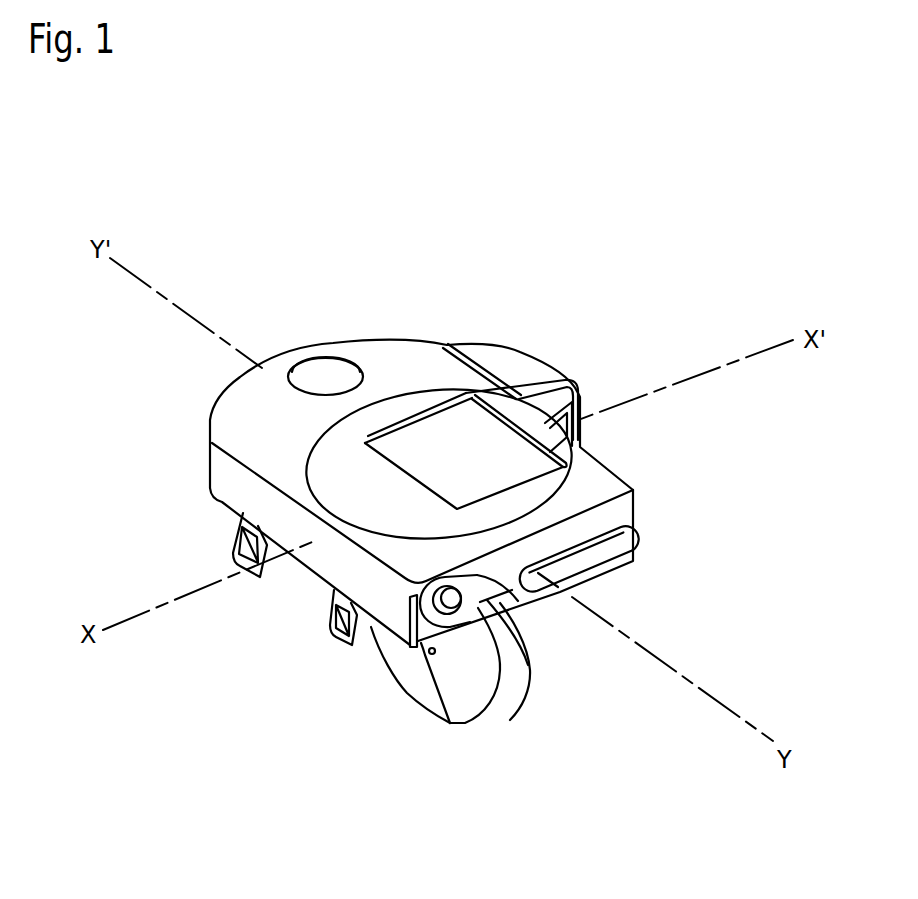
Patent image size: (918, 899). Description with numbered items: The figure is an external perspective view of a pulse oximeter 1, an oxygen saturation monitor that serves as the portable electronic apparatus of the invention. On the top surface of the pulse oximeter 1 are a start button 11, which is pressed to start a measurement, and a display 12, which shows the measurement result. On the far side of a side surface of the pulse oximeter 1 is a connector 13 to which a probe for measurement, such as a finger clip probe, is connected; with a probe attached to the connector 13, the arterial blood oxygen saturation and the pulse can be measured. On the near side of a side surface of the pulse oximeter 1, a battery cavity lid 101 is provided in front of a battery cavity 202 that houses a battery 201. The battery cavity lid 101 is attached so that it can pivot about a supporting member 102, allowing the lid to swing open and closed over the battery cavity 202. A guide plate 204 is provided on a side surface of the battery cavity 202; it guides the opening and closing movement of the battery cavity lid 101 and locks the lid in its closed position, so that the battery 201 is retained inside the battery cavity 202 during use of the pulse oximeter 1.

The pulse oximeter 1 is at (600, 474).
The start button 11 is at (323, 378).
The display 12 is at (462, 440).
The connector 13 is at (562, 420).
The battery cavity lid 101 is at (473, 702).
The supporting member 102 is at (432, 655).
The battery 201 is at (490, 677).
The battery cavity 202 is at (505, 606).
The guide plate 204 is at (530, 610).